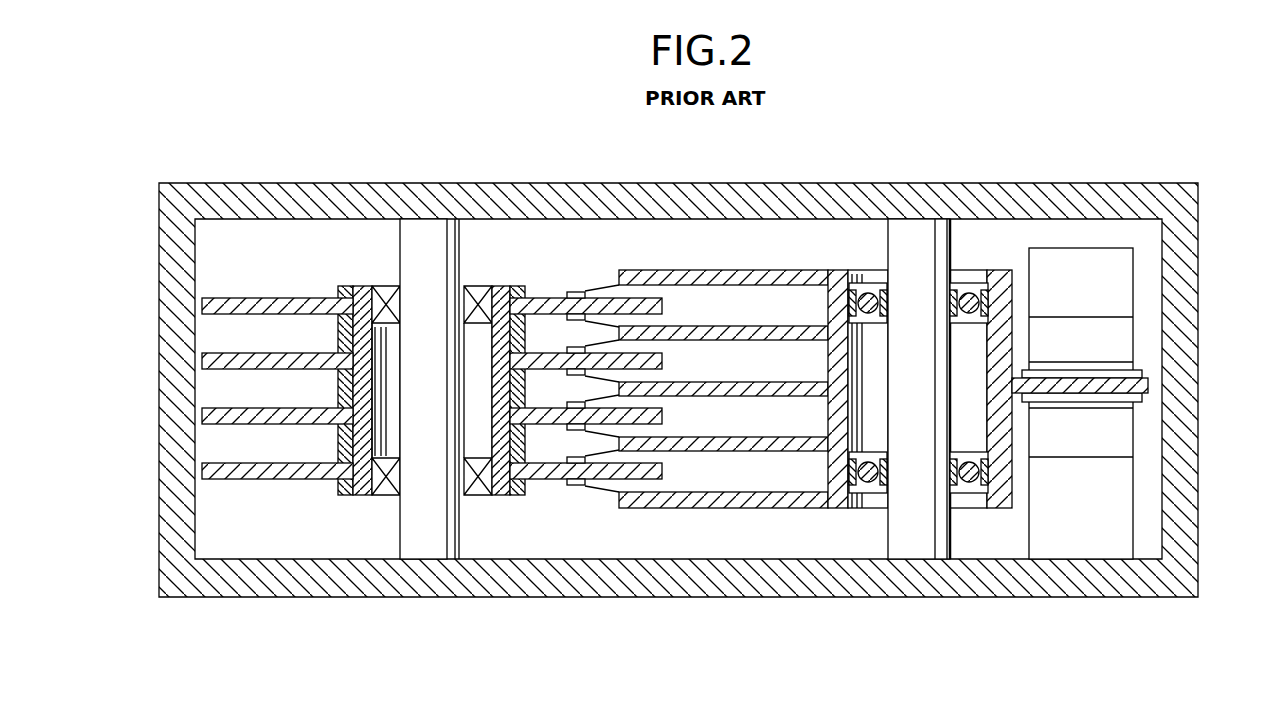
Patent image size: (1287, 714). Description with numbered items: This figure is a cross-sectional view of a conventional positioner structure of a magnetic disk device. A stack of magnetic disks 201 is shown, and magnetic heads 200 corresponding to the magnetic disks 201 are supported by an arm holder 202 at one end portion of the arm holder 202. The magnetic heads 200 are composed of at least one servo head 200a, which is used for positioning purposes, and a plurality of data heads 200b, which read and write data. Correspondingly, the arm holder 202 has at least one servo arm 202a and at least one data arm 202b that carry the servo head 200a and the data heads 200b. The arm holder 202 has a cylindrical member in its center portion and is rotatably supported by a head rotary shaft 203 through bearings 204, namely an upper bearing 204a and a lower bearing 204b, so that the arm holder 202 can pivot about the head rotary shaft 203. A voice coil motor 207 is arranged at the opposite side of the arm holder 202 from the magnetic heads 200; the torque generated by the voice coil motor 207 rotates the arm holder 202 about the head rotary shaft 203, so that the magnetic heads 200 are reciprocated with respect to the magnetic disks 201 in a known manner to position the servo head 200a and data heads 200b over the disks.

The magnetic heads 200 is at (583, 478).
The servo head 200a is at (574, 486).
The data heads 200b is at (556, 480).
The magnetic disks 201 is at (270, 298).
The arm holder 202 is at (824, 453).
The servo arm 202a is at (795, 500).
The data arm 202b is at (705, 443).
The head rotary shaft 203 is at (908, 225).
The bearings 204 is at (976, 296).
The bearing 204a is at (972, 292).
The bearing 204b is at (965, 460).
The voice coil motor 207 is at (1125, 335).